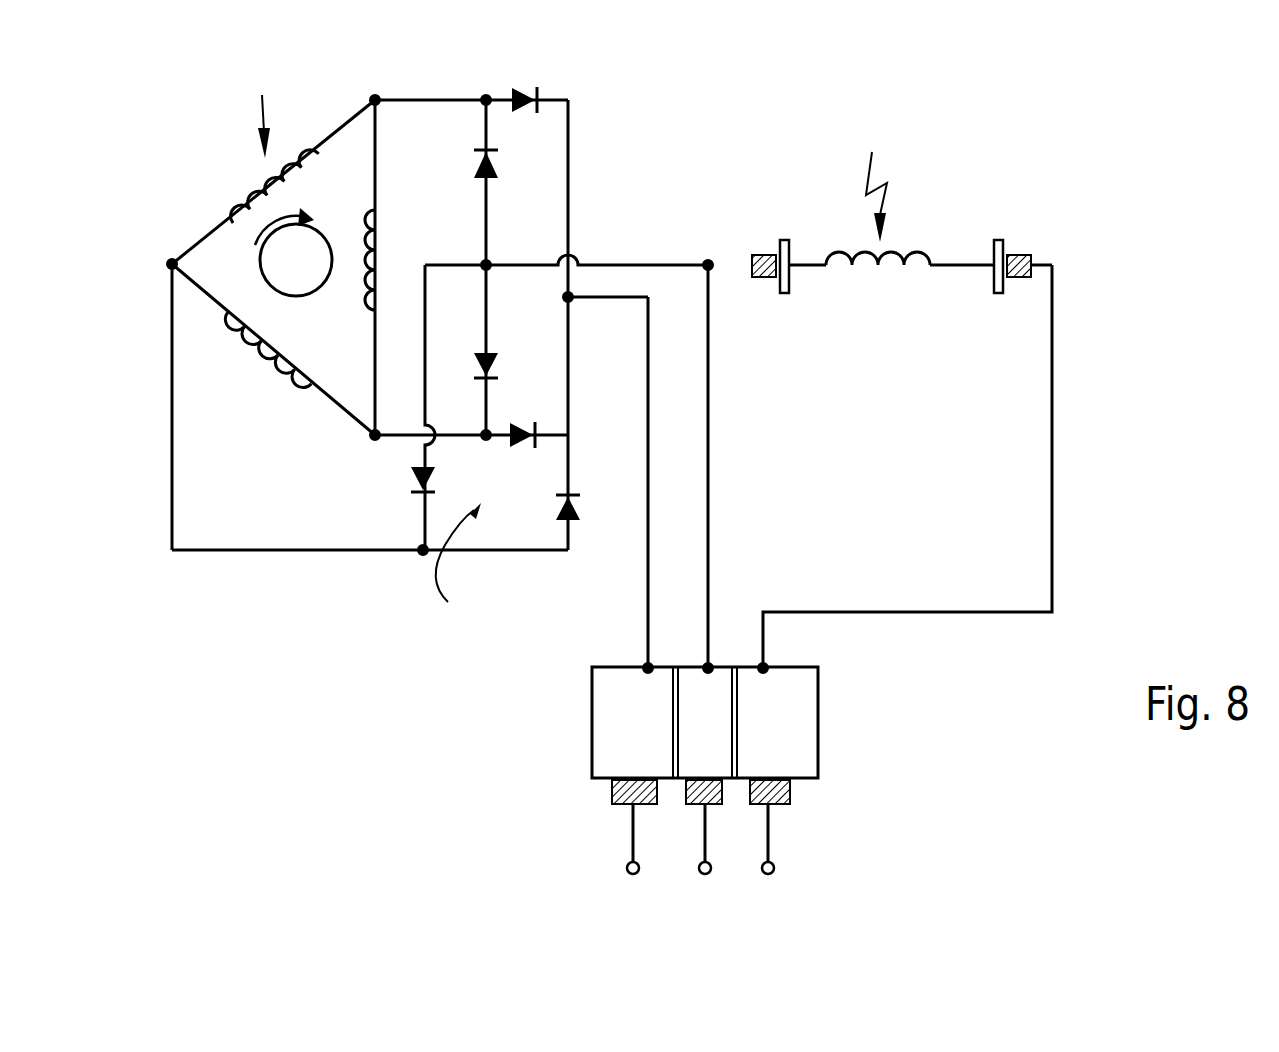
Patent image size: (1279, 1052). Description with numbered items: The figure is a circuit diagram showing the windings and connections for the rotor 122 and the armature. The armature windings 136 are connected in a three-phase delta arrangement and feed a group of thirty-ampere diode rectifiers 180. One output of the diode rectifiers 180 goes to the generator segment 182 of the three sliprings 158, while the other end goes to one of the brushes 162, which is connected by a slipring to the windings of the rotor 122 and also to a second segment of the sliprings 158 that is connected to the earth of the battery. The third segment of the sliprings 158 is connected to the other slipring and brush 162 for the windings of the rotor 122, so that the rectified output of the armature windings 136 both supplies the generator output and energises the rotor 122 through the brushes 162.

The armature windings 136 is at (258, 190).
The rotor 122 is at (290, 297).
The brushes 162 is at (770, 280).
The diode rectifiers 180 is at (396, 505).
The sliprings 158 is at (572, 726).
The generator segment 182 is at (633, 823).